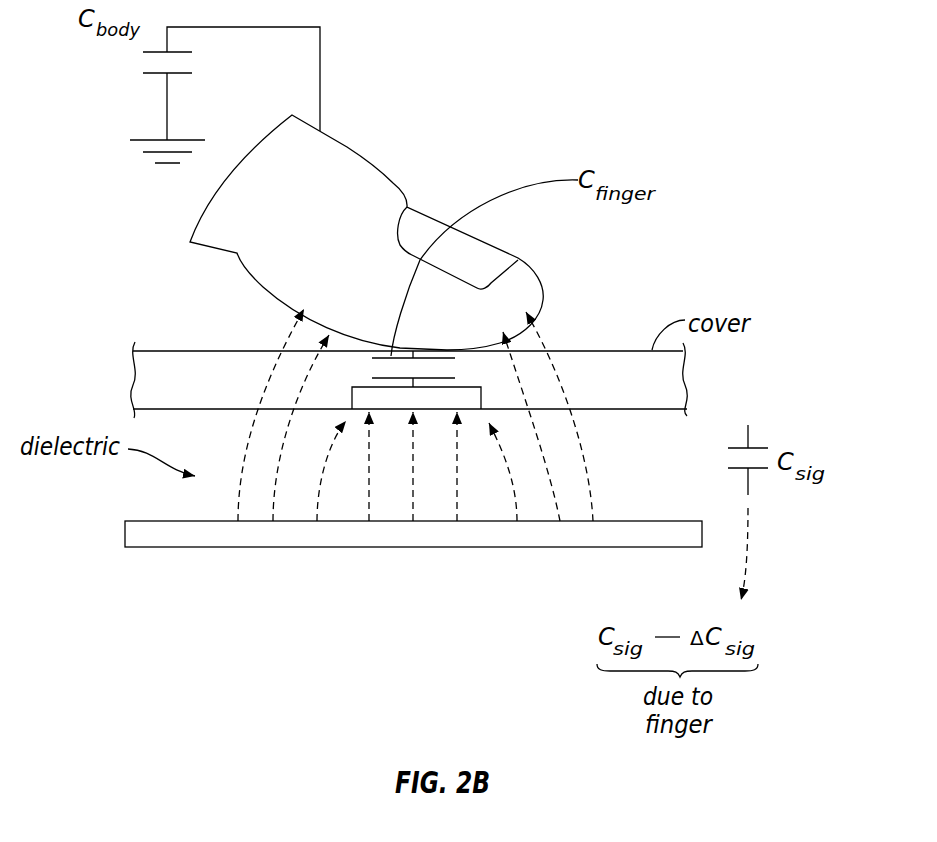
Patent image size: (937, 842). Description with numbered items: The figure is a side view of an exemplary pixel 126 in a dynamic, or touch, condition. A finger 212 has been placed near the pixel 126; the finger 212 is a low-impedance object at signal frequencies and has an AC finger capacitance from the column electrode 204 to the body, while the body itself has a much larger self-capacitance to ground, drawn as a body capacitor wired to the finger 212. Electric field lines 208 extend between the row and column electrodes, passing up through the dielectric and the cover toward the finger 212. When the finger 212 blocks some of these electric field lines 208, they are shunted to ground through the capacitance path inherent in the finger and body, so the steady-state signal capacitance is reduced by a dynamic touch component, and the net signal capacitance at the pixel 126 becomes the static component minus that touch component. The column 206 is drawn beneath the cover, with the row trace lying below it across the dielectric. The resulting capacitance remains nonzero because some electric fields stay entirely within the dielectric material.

The finger 212 is at (348, 147).
The electric field lines 208 is at (563, 367).
The column 206 is at (352, 400).
The column electrode 204 is at (198, 547).
The pixel 126 is at (440, 600).